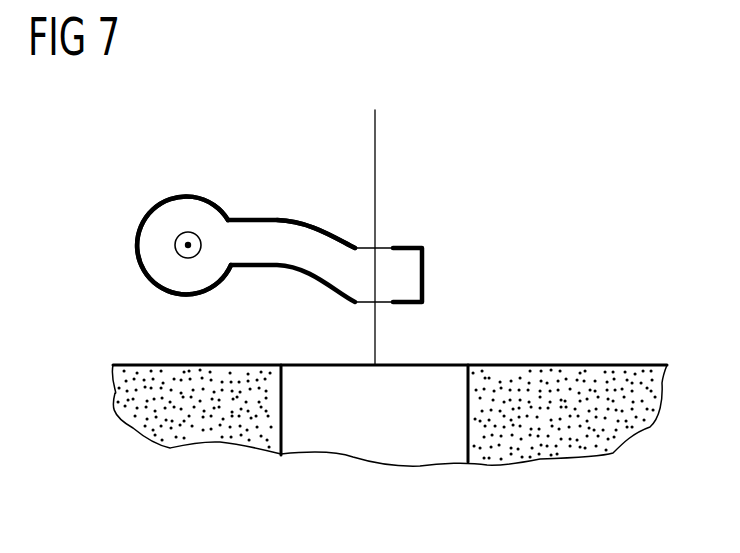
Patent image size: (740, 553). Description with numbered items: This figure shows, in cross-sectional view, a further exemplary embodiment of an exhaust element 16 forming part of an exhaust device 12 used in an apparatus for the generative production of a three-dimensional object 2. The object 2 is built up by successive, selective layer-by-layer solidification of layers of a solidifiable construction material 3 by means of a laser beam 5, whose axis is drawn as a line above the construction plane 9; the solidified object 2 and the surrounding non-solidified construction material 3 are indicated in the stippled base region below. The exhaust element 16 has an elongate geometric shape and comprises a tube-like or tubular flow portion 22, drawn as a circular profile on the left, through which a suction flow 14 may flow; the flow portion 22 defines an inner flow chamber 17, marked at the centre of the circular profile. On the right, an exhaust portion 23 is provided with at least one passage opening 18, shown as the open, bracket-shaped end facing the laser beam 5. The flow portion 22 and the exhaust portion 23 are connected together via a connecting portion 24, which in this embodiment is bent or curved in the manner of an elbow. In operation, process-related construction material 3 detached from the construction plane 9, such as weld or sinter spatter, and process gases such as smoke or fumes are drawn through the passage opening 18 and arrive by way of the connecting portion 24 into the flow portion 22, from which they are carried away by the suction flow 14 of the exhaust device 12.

The three-dimensional object 2 is at (378, 437).
The construction material 3 is at (202, 425).
The laser beam 5 is at (375, 133).
The construction plane 9 is at (567, 362).
The exhaust device 12 is at (225, 136).
The suction flow 14 is at (175, 246).
The exhaust element 16 is at (225, 133).
The flow chamber 17 is at (173, 229).
The passage opening 18 is at (382, 238).
The flow portion 22 is at (137, 245).
The exhaust portion 23 is at (385, 234).
The connecting portion 24 is at (273, 220).